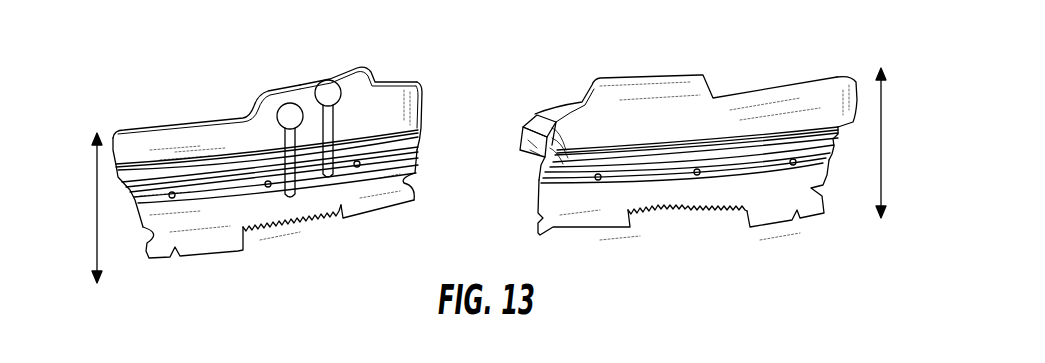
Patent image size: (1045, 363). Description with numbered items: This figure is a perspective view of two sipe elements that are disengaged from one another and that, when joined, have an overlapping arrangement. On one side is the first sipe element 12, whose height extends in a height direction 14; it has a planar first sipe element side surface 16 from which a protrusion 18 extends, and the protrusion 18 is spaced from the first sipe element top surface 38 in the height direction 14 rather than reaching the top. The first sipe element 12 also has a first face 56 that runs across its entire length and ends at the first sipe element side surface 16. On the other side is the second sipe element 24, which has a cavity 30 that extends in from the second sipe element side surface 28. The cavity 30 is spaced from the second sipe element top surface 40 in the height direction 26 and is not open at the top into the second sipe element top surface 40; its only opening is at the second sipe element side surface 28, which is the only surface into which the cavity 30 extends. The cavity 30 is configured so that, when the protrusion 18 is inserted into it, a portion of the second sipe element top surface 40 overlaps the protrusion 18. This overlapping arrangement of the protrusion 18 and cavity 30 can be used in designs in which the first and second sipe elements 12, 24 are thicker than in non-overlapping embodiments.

The first sipe element 12 is at (795, 87).
The height direction 14 is at (882, 142).
The first sipe element side surface 16 is at (535, 208).
The protrusion 18 is at (531, 192).
The second sipe element 24 is at (197, 123).
The height direction 26 is at (97, 208).
The second sipe element side surface 28 is at (426, 152).
The cavity 30 is at (422, 104).
The first sipe element top surface 38 is at (654, 73).
The second sipe element top surface 40 is at (397, 72).
The first face 56 is at (599, 194).